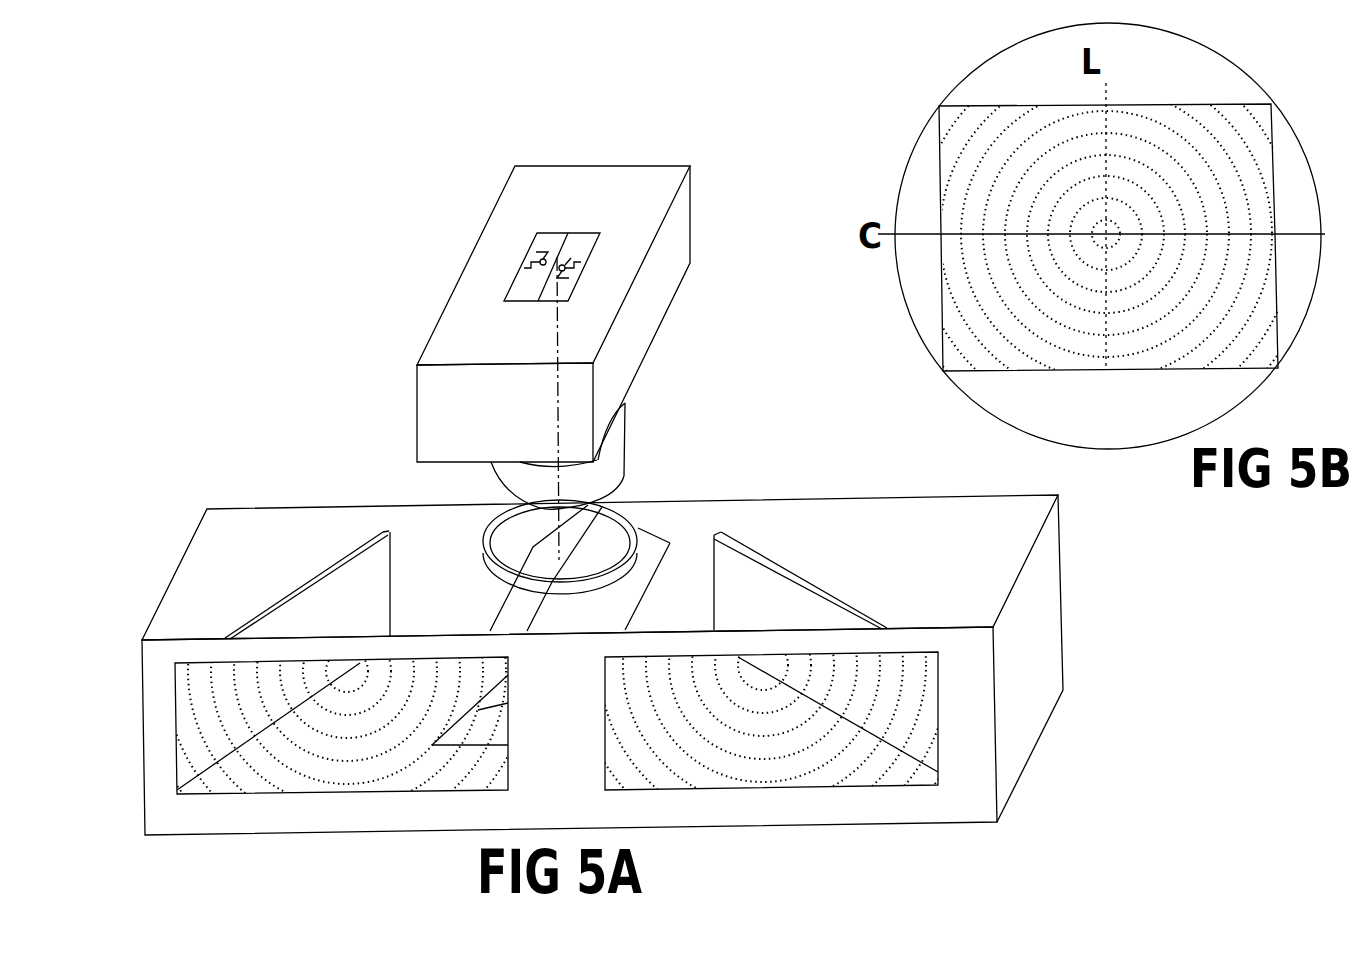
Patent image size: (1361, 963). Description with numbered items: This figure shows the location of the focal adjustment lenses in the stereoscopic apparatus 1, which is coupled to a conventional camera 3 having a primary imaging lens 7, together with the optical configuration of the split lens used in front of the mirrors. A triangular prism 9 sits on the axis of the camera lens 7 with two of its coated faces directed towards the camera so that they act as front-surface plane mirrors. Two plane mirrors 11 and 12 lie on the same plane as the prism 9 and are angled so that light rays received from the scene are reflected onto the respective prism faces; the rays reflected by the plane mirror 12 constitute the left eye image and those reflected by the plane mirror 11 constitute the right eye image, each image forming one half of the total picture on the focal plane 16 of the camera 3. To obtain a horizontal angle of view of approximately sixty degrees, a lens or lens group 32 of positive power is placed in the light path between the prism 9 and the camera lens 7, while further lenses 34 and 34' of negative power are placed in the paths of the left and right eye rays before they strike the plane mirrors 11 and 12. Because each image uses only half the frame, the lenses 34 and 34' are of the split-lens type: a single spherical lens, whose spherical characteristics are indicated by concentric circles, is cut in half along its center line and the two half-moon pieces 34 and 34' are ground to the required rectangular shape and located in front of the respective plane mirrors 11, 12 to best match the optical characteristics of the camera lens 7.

In FIG. 5A, the apparatus 1 is at (1048, 638).
In FIG. 5A, the camera 3 is at (683, 238).
In FIG. 5A, the lens 7 is at (617, 468).
In FIG. 5A, the triangular prism 9 is at (653, 557).
In FIG. 5A, the plane mirror 11 is at (333, 600).
In FIG. 5A, the plane mirror 12 is at (780, 600).
In FIG. 5A, the focal plane 16 is at (568, 233).
In FIG. 5A, the lens or lens group 32 is at (486, 514).
In FIG. 5A, the lens or lens group 34 is at (763, 665).
In FIG. 5B, the lens or lens group 34 is at (1090, 234).
In FIG. 5A, the lens or lens group 34' is at (347, 671).
In FIG. 5B, the lens or lens group 34' is at (1083, 234).